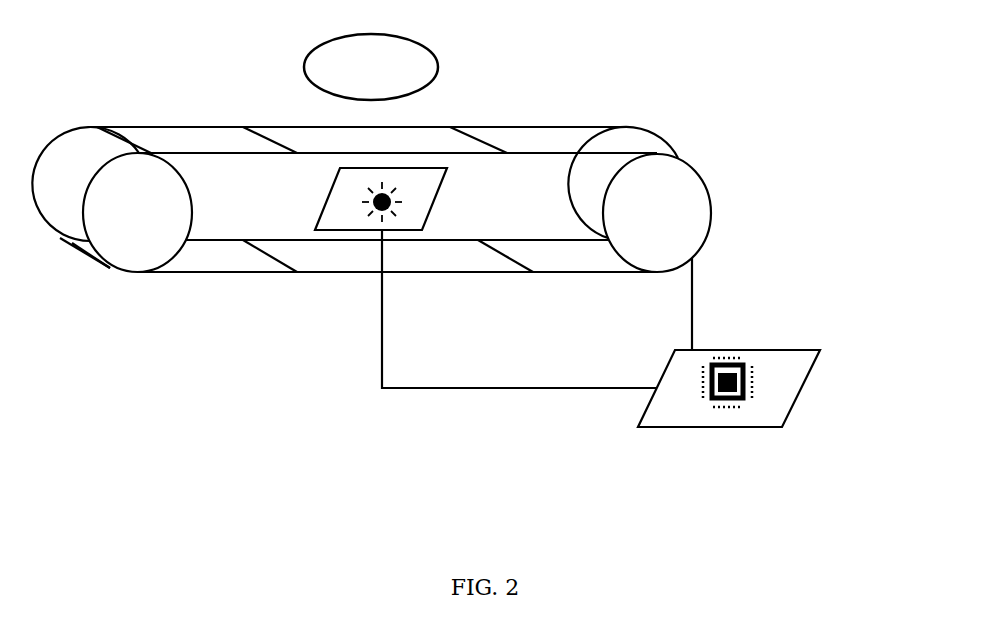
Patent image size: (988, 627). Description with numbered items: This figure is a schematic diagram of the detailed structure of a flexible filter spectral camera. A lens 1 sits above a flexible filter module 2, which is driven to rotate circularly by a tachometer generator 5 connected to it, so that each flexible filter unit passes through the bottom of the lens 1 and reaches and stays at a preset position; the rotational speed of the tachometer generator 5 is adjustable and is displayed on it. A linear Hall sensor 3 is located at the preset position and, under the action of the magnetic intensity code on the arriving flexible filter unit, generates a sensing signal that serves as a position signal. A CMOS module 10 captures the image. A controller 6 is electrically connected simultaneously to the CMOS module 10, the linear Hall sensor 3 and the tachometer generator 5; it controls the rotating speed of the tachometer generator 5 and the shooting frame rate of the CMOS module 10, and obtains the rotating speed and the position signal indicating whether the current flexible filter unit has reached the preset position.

The lens 1 is at (440, 58).
The flexible filter module 2 is at (499, 180).
The linear Hall sensor 3 is at (446, 165).
The CMOS module 10 is at (437, 190).
The tachometer generator 5 is at (710, 238).
The controller 6 is at (800, 388).